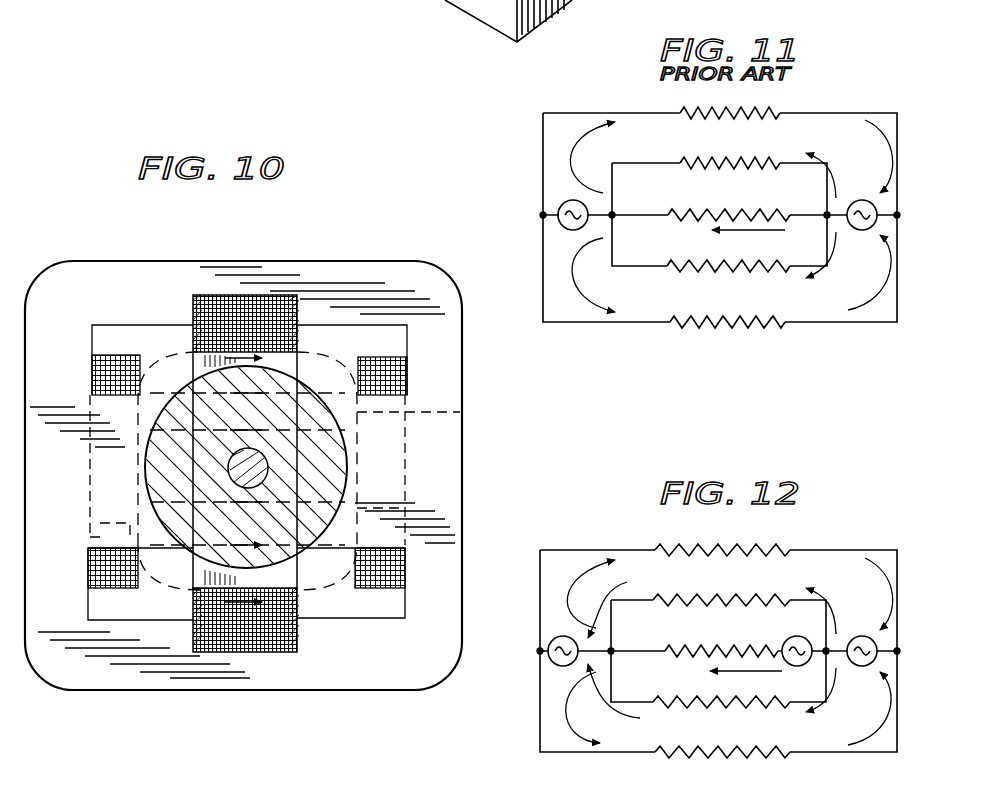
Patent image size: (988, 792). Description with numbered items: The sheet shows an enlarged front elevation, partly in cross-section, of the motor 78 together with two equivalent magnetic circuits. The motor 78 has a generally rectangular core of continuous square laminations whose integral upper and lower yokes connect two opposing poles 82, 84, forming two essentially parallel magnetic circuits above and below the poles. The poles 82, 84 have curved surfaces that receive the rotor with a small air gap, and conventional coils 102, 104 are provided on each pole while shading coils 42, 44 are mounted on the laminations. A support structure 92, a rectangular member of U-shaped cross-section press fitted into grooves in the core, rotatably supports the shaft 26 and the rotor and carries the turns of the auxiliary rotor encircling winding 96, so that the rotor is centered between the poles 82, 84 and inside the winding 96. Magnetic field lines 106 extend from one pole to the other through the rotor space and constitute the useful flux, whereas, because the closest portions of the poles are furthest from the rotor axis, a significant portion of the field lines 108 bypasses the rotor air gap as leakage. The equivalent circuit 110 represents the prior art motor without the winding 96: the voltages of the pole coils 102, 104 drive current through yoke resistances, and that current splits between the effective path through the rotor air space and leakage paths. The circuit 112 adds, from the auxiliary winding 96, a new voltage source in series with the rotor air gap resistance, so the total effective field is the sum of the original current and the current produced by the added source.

In FIG. 10, the motor 78 is at (360, 258).
In FIG. 10, the pole 84 is at (187, 362).
In FIG. 10, the pole 82 is at (325, 545).
In FIG. 10, the coil 104 is at (407, 370).
In FIG. 10, the coil 102 is at (112, 588).
In FIG. 10, the support structure 92 is at (297, 632).
In FIG. 10, the auxiliary rotor encircling winding 96 is at (262, 652).
In FIG. 10, the shaft 26 is at (228, 470).
In FIG. 10, the field lines 108 is at (195, 365).
In FIG. 10, the magnetic field lines 106 is at (342, 418).
In FIG. 10, the shading coil 42 is at (426, 470).
In FIG. 10, the shading coil 44 is at (88, 530).
In FIG. 11, the equivalent circuit 110 is at (528, 150).
In FIG. 12, the circuit 112 is at (528, 752).